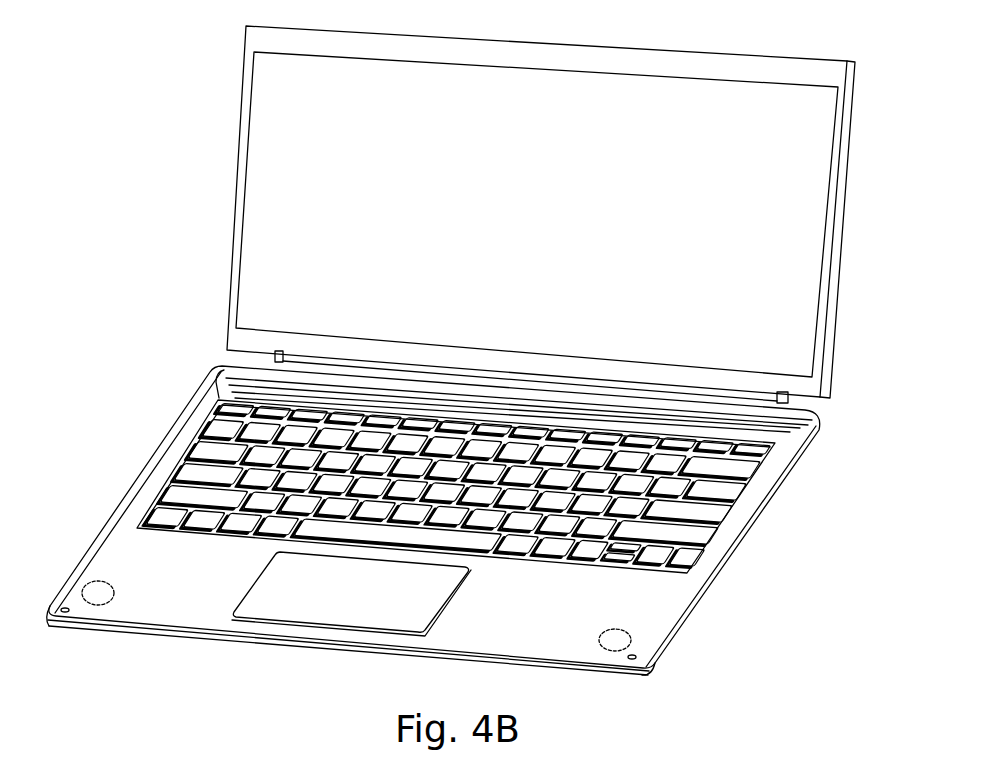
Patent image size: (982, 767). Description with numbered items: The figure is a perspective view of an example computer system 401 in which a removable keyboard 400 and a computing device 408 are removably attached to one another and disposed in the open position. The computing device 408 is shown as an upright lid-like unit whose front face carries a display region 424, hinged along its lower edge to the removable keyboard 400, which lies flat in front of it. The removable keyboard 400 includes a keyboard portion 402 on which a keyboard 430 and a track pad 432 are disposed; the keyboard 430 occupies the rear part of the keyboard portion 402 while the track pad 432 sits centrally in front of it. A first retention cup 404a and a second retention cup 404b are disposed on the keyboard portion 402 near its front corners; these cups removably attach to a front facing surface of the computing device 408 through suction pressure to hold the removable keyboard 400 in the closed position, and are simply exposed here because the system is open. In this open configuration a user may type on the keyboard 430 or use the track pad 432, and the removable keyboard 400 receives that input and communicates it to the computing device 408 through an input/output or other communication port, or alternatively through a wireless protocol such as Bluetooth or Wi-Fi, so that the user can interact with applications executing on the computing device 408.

The removable keyboard 400 is at (95, 460).
The computer system 401 is at (137, 118).
The keyboard portion 402 is at (115, 516).
The first retention cup 404a is at (618, 641).
The second retention cup 404b is at (100, 592).
The computing device 408 is at (851, 293).
The display screen 424 is at (566, 150).
The keyboard 430 is at (737, 497).
The track pad 432 is at (402, 610).